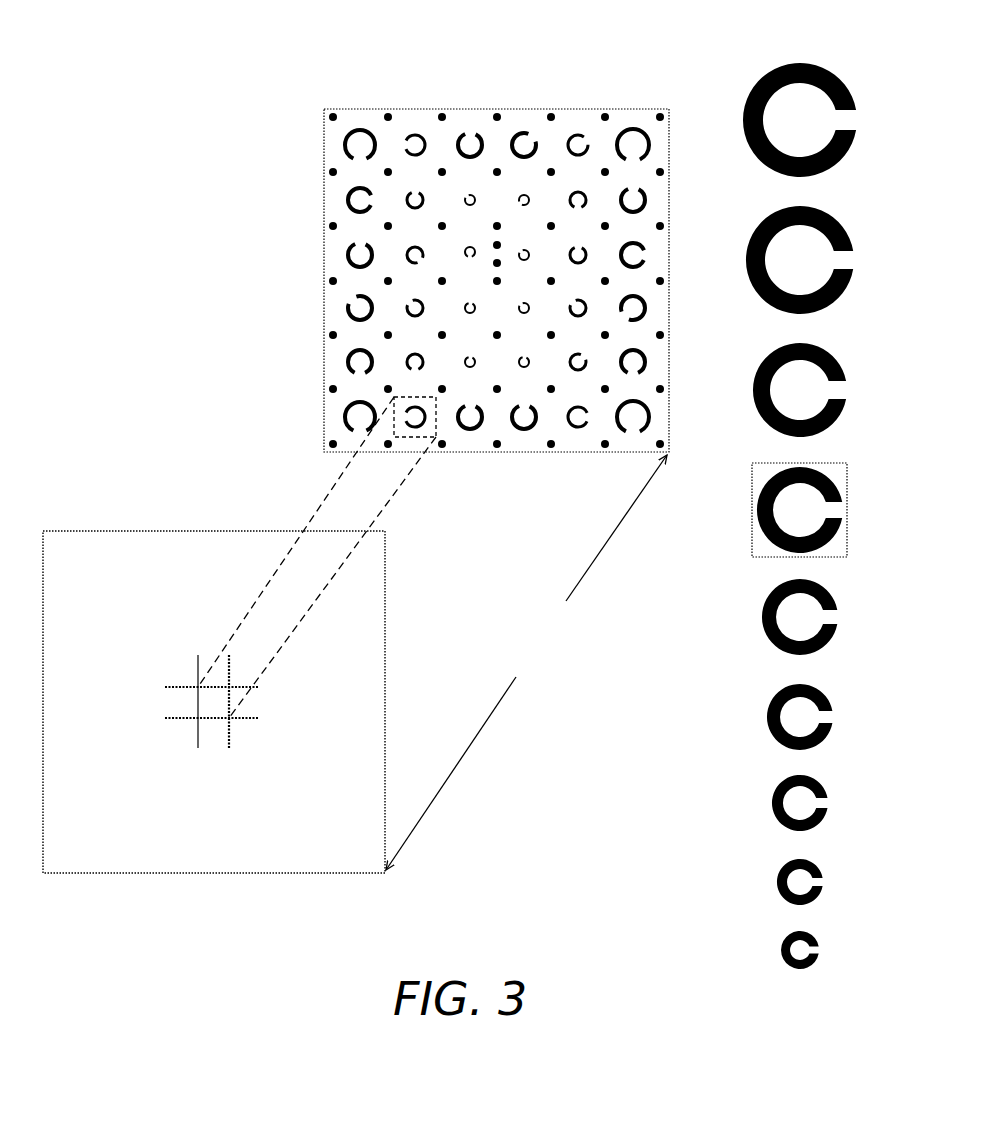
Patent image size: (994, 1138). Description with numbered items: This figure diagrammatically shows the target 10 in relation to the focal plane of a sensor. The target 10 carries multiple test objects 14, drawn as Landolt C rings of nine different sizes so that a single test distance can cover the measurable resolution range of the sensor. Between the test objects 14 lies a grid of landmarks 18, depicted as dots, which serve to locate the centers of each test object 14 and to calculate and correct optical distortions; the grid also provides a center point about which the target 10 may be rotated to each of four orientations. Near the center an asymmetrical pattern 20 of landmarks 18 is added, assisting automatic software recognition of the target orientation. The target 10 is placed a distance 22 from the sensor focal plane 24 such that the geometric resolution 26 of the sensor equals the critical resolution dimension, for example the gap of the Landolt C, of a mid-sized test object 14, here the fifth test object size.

The target 10 is at (457, 109).
The test object 14 is at (413, 428).
The landmark 18 is at (329, 173).
The asymmetrical pattern 20 is at (480, 264).
The distance 22 is at (526, 662).
The sensor focal plane 24 is at (164, 531).
The geometric resolution 26 is at (175, 735).